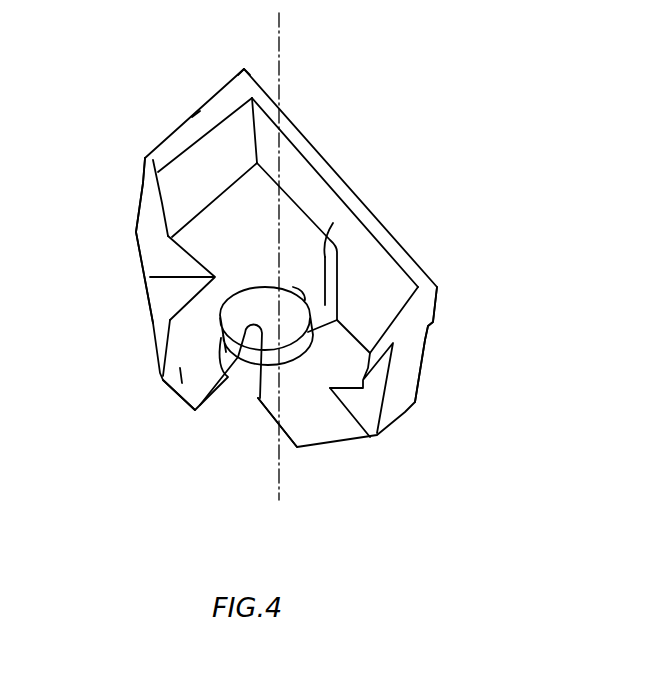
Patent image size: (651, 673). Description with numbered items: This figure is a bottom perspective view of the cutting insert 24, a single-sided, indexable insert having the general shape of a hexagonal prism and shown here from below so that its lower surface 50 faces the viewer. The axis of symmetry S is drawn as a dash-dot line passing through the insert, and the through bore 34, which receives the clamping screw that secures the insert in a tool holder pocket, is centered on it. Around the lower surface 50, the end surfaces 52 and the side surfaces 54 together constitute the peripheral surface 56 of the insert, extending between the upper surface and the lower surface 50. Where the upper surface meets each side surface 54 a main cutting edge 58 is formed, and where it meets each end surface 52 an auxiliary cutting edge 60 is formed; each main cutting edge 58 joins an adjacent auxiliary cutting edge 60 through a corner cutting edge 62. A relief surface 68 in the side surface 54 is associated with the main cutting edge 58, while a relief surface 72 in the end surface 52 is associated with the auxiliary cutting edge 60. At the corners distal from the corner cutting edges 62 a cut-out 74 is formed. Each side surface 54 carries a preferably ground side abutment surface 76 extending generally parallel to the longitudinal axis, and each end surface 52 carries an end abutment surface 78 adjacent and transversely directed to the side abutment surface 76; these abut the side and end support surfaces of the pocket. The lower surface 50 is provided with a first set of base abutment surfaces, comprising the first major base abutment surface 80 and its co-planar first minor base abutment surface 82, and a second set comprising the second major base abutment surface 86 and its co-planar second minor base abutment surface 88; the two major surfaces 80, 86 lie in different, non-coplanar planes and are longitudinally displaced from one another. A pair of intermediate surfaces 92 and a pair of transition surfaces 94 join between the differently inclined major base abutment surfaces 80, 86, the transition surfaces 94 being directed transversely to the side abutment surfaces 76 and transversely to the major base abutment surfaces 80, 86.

The cutting insert 24 is at (415, 102).
The through bore 34 is at (253, 400).
The lower surface 50 is at (160, 313).
The end surfaces 52 is at (192, 139).
The side surfaces 54 is at (340, 198).
The peripheral surface 56 is at (160, 194).
The main cutting edges 58 is at (312, 137).
The auxiliary cutting edges 60 is at (223, 82).
The corner cutting edge 62 is at (244, 68).
The relief surface 68 is at (282, 118).
The relief surface 72 is at (208, 118).
The cut-out 74 is at (144, 227).
The side abutment surface 76 is at (302, 175).
The end abutment surface 78 is at (193, 185).
The first major base abutment surface 80 is at (170, 380).
The first minor base abutment surface 82 is at (363, 407).
The second major base abutment surface 86 is at (322, 418).
The second minor base abutment surface 88 is at (175, 258).
The intermediate surfaces 92 is at (333, 242).
The transition surfaces 94 is at (323, 263).
The axis of symmetry S is at (283, 38).